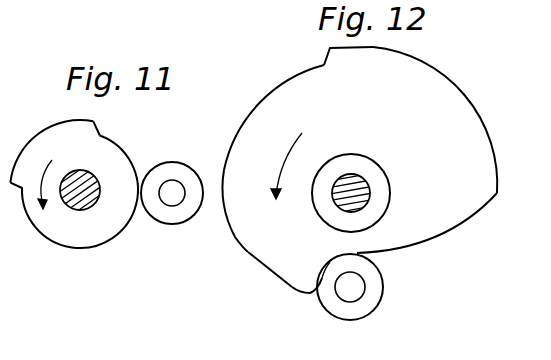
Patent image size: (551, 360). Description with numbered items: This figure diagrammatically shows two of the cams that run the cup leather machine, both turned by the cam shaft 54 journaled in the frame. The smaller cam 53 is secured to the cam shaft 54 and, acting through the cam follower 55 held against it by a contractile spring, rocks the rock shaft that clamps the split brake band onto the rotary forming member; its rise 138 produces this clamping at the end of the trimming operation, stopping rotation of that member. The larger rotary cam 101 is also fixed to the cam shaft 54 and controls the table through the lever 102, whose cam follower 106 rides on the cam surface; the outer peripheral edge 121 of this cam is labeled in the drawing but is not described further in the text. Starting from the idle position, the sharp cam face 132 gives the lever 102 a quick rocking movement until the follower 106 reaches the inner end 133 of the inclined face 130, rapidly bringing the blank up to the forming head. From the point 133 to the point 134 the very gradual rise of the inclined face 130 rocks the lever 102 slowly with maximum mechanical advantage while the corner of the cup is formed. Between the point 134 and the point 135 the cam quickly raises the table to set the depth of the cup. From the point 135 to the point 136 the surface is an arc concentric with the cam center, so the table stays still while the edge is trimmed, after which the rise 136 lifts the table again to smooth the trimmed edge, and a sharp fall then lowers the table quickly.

In FIG. 11, the cam 53 is at (50, 243).
In FIG. 11, the cam shaft 54 is at (92, 180).
In FIG. 12, the cam shaft 54 is at (365, 192).
In FIG. 11, the cam follower 55 is at (157, 213).
In FIG. 11, the rise 138 is at (23, 150).
In FIG. 12, the rotary cam 101 is at (362, 116).
In FIG. 12, the lever 102 is at (480, 265).
In FIG. 12, the cam follower 106 is at (374, 309).
In FIG. 12, the peripheral edge 121 is at (460, 93).
In FIG. 12, the inclined face 130 is at (273, 267).
In FIG. 12, the sharp cam face 132 is at (330, 262).
In FIG. 12, the inner end 133 is at (292, 300).
In FIG. 12, the point 134 is at (243, 233).
In FIG. 12, the point 135 is at (258, 177).
In FIG. 12, the rise 136 is at (324, 64).